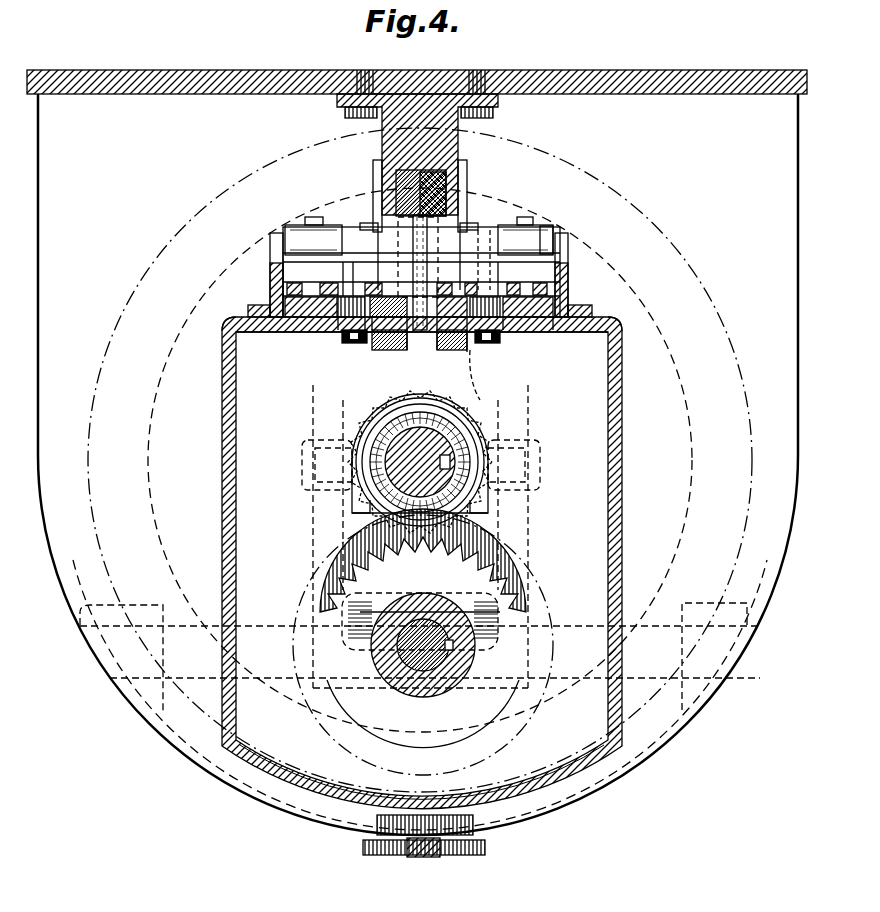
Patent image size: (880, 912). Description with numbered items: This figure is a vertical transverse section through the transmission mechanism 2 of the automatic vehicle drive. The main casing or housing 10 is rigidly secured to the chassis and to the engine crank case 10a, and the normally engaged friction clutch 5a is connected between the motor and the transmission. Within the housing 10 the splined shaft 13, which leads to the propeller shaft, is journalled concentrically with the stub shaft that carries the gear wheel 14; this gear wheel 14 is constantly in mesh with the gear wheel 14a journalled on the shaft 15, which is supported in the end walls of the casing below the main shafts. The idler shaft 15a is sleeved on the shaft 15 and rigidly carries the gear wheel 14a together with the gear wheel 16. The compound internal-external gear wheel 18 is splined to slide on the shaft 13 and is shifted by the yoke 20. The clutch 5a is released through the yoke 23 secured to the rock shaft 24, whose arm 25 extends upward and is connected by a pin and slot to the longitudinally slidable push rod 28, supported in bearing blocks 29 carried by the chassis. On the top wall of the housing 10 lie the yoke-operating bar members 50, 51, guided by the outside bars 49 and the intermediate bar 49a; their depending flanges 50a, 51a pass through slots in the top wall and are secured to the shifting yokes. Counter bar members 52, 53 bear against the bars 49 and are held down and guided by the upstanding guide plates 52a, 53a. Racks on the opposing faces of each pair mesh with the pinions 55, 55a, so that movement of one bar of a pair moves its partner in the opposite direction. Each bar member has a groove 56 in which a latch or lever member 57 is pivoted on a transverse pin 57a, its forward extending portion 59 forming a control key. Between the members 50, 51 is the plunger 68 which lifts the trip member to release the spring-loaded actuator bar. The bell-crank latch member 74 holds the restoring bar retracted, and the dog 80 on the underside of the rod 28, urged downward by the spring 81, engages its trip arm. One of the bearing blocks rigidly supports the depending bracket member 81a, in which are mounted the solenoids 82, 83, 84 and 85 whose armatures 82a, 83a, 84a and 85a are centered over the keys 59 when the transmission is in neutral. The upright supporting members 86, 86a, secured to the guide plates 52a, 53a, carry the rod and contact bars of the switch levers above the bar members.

The transmission mechanism 2 is at (186, 764).
The friction clutch 5a is at (145, 276).
The main casing or housing 10 is at (222, 478).
The engine crank case 10a is at (420, 460).
The splined shaft 13 is at (397, 440).
The gear wheel 14 is at (423, 640).
The gear wheel 14a is at (516, 550).
The shaft 15 is at (396, 661).
The idler shaft 15a is at (452, 688).
The gear wheel 16 is at (388, 600).
The gear wheel 18 is at (355, 527).
The yoke 20 is at (478, 430).
The yoke 23 is at (530, 492).
The rock shaft 24 is at (660, 607).
The arm 25 is at (468, 172).
The push rod 28 is at (458, 178).
The bearing block 29 is at (382, 146).
The outside bars 49 is at (350, 290).
The intermediate bar 49a is at (440, 345).
The yoke-operating bar member 50 is at (468, 352).
The flange 50a is at (470, 372).
The yoke-operating bar member 51 is at (358, 344).
The flange 51a is at (381, 346).
The counter-plate or bar member 52 is at (530, 333).
The guide plate 52a is at (570, 292).
The counter-plate or bar member 53 is at (306, 335).
The guide plate 53a is at (248, 312).
The pinion 55 is at (500, 338).
The pinion 55a is at (334, 336).
The longitudinal groove or recess 56 is at (292, 336).
The latch or lever member 57 is at (318, 285).
The transverse pin 57a is at (276, 294).
The forward extending portion 59 is at (517, 284).
The rod or plunger 68 is at (401, 325).
The latch member 74 is at (427, 243).
The trip member or dog 80 is at (374, 181).
The spring 81 is at (463, 150).
The bracket member 81a is at (541, 229).
The solenoid 82 is at (512, 217).
The armature 82a is at (528, 220).
The solenoid 83 is at (476, 245).
The armature 83a is at (466, 226).
The solenoid 84 is at (403, 264).
The armature 84a is at (378, 225).
The solenoid 85 is at (298, 225).
The armature 85a is at (313, 217).
The upright supporting member 86 is at (570, 241).
The upright supporting member 86a is at (272, 240).